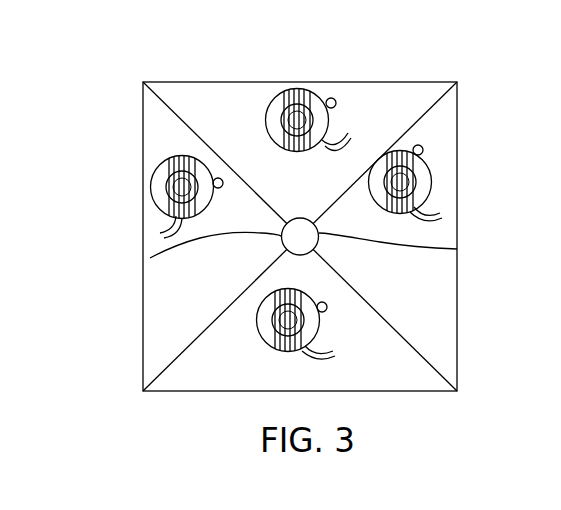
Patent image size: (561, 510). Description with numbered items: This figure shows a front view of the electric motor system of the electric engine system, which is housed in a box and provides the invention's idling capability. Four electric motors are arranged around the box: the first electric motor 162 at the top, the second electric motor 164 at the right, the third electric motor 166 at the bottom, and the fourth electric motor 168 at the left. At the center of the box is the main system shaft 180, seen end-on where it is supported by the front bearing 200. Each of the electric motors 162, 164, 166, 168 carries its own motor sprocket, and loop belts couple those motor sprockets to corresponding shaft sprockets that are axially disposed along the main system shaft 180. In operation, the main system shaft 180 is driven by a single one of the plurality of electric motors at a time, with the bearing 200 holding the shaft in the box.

The first electric motor 162 is at (276, 96).
The second electric motor 164 is at (432, 168).
The third electric motor 166 is at (257, 318).
The fourth electric motor 168 is at (150, 183).
The main system shaft 180 is at (150, 258).
The front bearing 200 is at (457, 249).